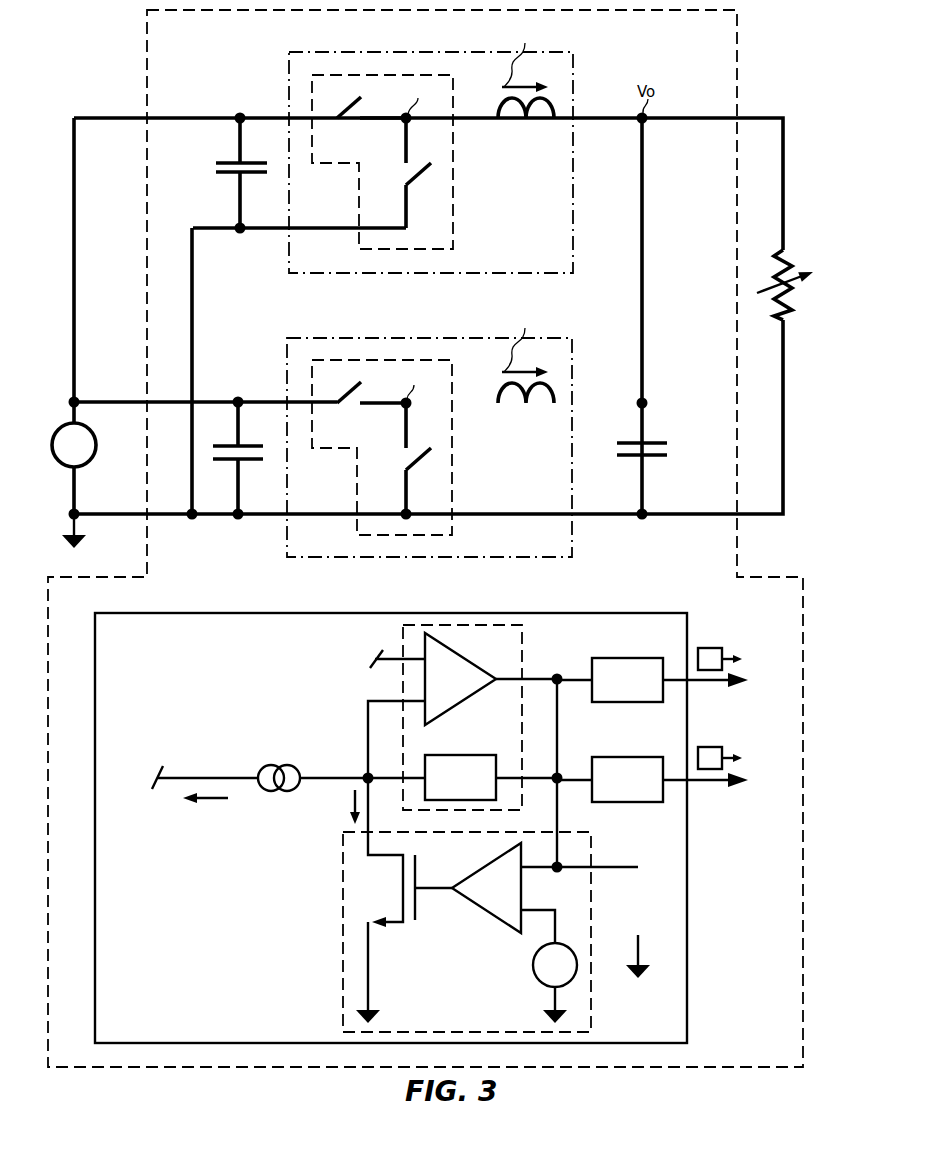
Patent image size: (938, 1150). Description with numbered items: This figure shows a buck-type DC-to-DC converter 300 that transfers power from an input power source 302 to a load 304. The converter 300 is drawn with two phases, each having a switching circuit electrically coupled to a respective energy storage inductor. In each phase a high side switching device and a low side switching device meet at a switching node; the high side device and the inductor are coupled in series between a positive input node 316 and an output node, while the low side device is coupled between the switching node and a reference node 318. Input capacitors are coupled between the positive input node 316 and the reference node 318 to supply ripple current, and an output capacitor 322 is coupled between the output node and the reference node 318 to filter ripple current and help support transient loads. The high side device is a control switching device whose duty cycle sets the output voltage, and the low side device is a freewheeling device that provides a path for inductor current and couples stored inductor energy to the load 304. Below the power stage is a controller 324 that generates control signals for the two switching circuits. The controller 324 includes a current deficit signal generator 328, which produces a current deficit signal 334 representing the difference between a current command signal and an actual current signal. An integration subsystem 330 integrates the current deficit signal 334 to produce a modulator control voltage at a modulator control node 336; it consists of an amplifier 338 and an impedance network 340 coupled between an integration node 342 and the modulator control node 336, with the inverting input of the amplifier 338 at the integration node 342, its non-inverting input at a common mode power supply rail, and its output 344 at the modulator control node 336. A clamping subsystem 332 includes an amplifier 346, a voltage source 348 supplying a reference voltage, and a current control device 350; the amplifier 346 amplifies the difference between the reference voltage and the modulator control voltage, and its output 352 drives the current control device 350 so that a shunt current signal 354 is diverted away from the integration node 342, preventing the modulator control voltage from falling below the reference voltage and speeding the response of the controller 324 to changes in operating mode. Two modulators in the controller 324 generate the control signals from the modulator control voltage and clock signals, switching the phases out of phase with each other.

The DC-to-DC converter 300 is at (738, 30).
The input power source 302 is at (58, 428).
The load 304 is at (800, 305).
The positive input node 316 is at (244, 113).
The reference node 318 is at (191, 518).
The output capacitor 322 is at (619, 465).
The controller 324 is at (136, 1026).
The current deficit signal generator 328 is at (282, 752).
The integration subsystem 330 is at (512, 654).
The clamping subsystem 332 is at (487, 1024).
The current deficit signal 334 is at (213, 799).
The modulator control node 336 is at (557, 673).
The amplifier 338 is at (465, 693).
The impedance network 340 is at (464, 755).
The integration node 342 is at (365, 774).
The output 344 is at (510, 682).
The amplifier 346 is at (503, 893).
The voltage source 348 is at (571, 950).
The current control device 350 is at (409, 940).
The output 352 is at (440, 884).
The shunt current signal 354 is at (353, 791).